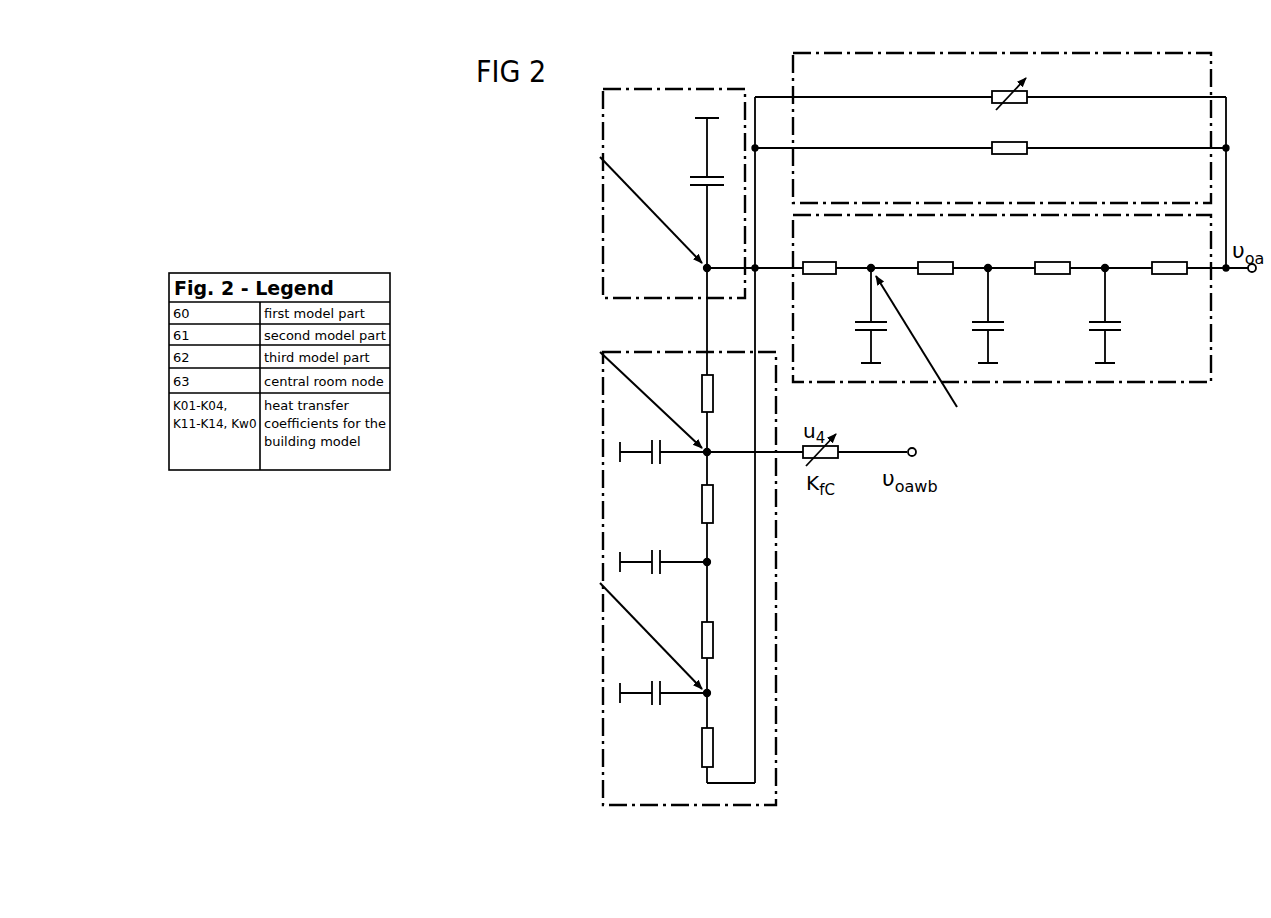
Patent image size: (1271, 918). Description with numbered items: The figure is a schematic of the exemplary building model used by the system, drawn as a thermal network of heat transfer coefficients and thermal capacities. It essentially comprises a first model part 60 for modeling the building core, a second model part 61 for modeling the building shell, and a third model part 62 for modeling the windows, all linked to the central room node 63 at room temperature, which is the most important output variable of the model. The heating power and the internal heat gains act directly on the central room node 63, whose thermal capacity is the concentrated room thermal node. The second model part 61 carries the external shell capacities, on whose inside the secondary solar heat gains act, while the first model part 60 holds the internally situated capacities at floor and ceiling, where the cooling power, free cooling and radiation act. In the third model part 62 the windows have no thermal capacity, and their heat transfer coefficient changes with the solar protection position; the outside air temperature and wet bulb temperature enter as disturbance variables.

The first model part 60 is at (776, 610).
The second model part 61 is at (1211, 330).
The third model part 62 is at (1211, 72).
The central room node 63 is at (603, 110).